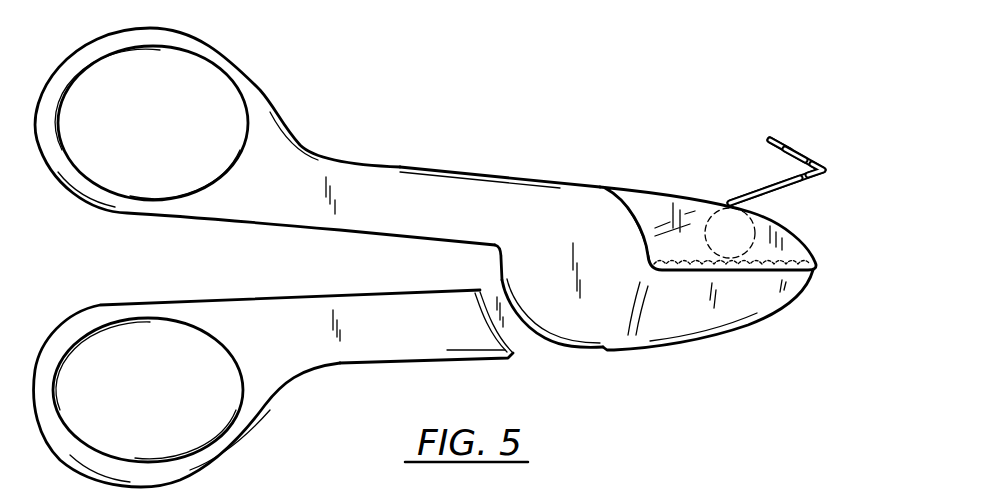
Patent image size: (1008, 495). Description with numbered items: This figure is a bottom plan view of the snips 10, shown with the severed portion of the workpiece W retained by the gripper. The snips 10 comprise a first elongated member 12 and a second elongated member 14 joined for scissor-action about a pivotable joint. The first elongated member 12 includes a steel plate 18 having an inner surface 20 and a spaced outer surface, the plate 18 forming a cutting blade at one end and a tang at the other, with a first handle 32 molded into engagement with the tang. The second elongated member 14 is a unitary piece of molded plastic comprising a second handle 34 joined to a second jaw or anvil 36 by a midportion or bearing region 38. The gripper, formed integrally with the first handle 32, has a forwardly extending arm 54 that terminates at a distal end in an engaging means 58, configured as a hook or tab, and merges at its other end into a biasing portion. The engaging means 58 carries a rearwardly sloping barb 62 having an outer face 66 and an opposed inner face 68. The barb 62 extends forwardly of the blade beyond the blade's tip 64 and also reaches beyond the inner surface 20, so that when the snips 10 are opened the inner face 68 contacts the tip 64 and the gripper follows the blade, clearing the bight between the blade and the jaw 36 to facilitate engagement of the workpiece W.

The snips 10 is at (540, 125).
The first elongated member 12 is at (270, 400).
The second elongated member 14 is at (316, 151).
The steel plate 18 is at (807, 237).
The inner surface 20 is at (672, 200).
The first handle 32 is at (408, 365).
The second handle 34 is at (400, 172).
The second jaw 36 is at (753, 310).
The bearing region 38 is at (587, 347).
The forwardly extending arm 54 is at (763, 188).
The engaging means 58 is at (787, 141).
The barb 62 is at (806, 147).
The tip 64 is at (813, 258).
The outer face 66 is at (821, 160).
The inner face 68 is at (776, 149).
The workpiece W is at (757, 230).